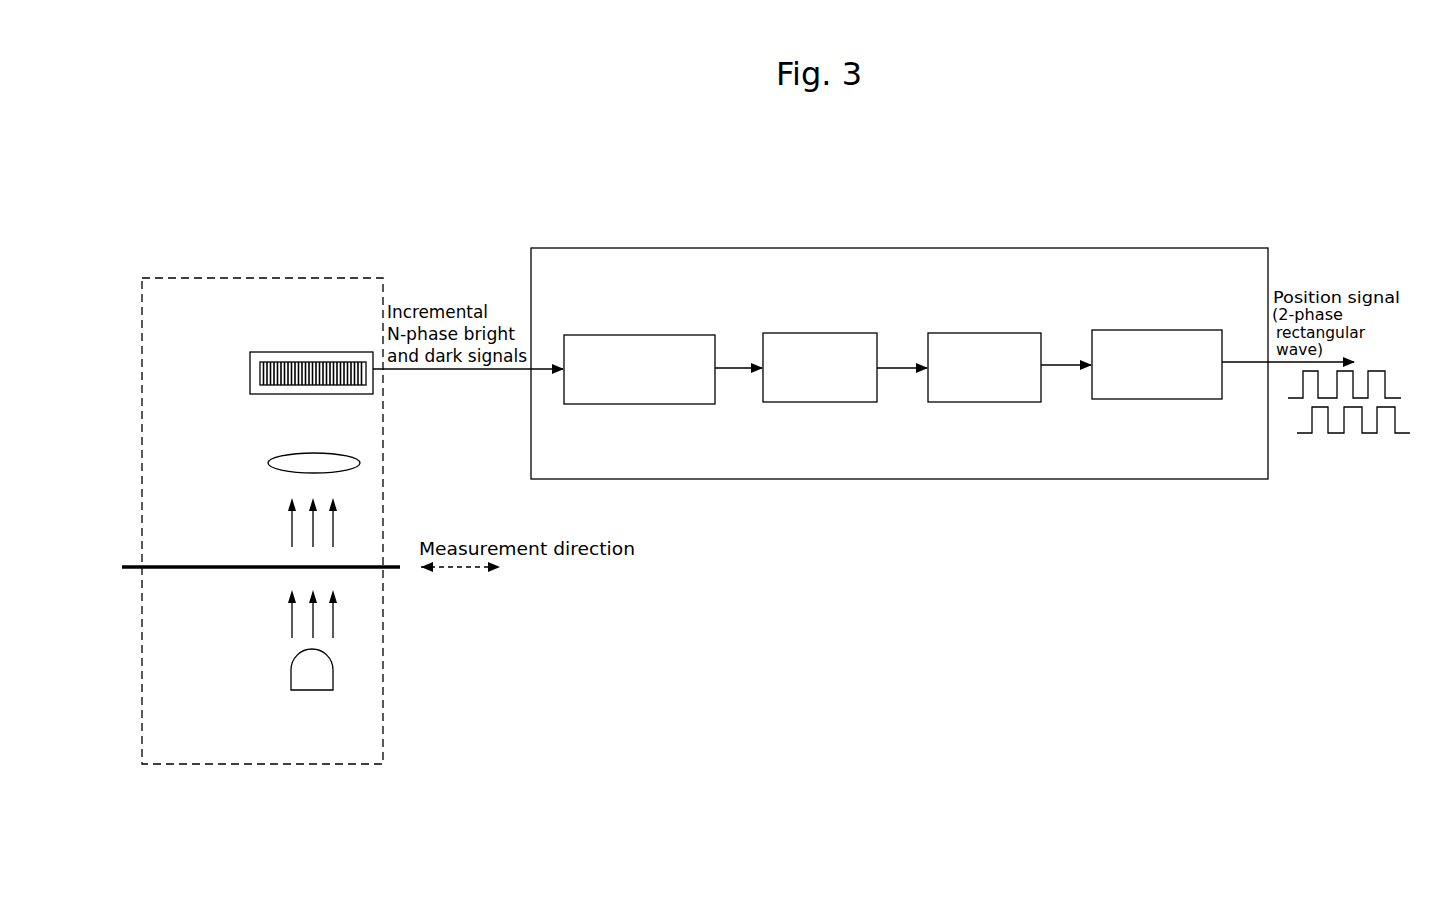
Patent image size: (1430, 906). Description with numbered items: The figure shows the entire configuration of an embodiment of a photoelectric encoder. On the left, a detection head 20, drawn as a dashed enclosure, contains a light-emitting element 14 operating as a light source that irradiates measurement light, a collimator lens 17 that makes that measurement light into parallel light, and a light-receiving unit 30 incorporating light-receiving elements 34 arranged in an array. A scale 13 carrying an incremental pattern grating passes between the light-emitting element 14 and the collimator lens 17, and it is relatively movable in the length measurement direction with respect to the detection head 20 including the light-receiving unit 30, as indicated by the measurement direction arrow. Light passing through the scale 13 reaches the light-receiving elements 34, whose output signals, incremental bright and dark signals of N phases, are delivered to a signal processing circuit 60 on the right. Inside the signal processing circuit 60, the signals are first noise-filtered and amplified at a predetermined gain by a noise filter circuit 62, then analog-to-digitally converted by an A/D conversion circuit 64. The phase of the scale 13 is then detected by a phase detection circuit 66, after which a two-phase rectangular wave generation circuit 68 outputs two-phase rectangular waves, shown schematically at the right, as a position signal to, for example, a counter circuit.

The scale 13 is at (255, 569).
The light-emitting element 14 is at (299, 691).
The collimator lens 17 is at (355, 456).
The detection head 20 is at (386, 723).
The light-receiving unit 30 is at (250, 367).
The light-receiving elements 34 is at (292, 362).
The signal processing circuit 60 is at (657, 248).
The noise filter circuit 62 is at (638, 405).
The A/D conversion circuit 64 is at (817, 402).
The phase detection circuit 66 is at (980, 402).
The 2-phase rectangular wave generation circuit 68 is at (1148, 399).